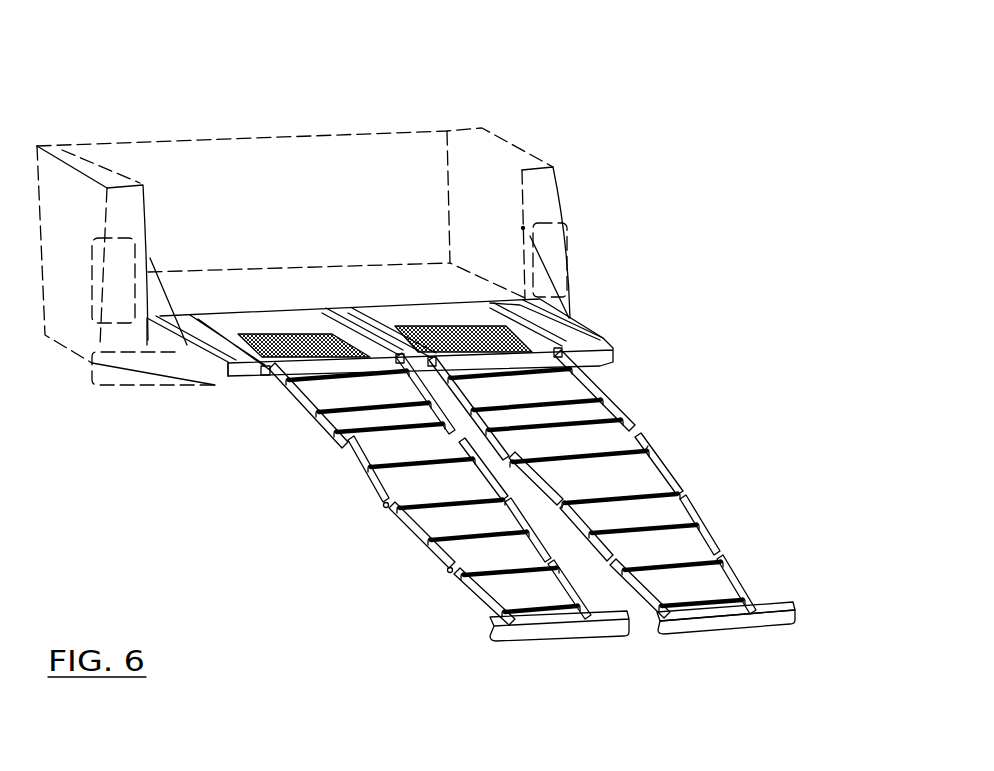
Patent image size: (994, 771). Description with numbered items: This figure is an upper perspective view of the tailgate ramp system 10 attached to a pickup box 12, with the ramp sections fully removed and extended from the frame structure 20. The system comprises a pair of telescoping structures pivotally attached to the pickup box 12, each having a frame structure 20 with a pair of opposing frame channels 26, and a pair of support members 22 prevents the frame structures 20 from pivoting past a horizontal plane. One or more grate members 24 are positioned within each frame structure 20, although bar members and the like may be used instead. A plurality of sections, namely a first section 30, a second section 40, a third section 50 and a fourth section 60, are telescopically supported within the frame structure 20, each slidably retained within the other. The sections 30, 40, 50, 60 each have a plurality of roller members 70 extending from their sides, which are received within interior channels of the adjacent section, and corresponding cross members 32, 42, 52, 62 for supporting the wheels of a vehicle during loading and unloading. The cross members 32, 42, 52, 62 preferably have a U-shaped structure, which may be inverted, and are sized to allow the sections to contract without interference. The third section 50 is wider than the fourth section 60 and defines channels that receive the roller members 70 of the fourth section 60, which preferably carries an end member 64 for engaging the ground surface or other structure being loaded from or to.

The tailgate ramp system 10 is at (590, 102).
The pickup box 12 is at (256, 118).
The frame structure 20 is at (222, 381).
The support member 22 is at (168, 297).
The grate member 24 is at (480, 330).
The frame channel 26 is at (262, 374).
The first section 30 is at (323, 437).
The cross member 32 is at (617, 402).
The second section 40 is at (360, 473).
The cross member 42 is at (650, 453).
The third section 50 is at (417, 533).
The cross member 52 is at (692, 527).
The fourth section 60 is at (483, 603).
The cross member 62 is at (757, 605).
The end member 64 is at (735, 632).
The roller member 70 is at (383, 503).